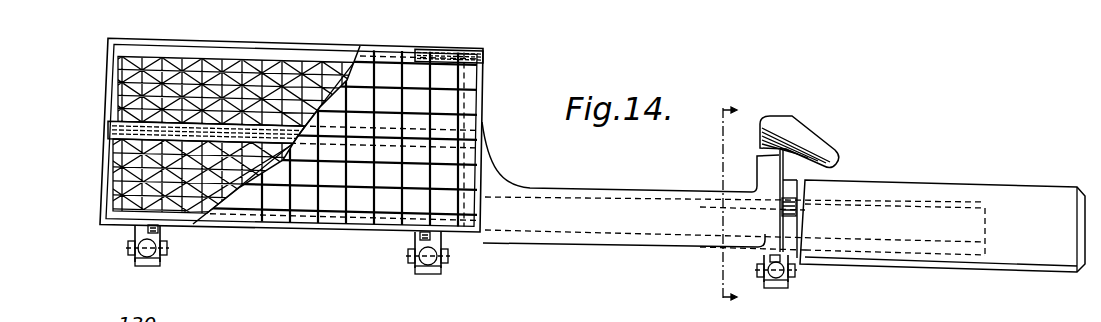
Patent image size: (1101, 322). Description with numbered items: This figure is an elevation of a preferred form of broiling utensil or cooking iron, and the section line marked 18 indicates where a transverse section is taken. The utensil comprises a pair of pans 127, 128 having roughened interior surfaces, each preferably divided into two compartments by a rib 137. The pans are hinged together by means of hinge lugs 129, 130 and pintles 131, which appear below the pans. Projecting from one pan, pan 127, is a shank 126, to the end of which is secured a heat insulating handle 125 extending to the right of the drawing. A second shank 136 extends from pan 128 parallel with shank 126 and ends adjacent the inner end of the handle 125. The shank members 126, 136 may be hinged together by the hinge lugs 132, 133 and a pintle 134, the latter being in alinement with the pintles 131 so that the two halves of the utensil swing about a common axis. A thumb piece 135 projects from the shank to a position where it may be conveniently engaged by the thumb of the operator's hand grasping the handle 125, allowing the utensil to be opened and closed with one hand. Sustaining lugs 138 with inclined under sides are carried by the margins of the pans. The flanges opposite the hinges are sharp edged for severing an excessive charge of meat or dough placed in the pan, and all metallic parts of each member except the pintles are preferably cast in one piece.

The heat insulating handle 125 is at (1032, 262).
The shank 126 is at (792, 196).
The pan 127 is at (123, 70).
The pan 128 is at (468, 106).
The hinge lug 129 is at (156, 237).
The hinge lug 130 is at (142, 266).
The pintle 131 is at (132, 249).
The hinge lug 132 is at (786, 289).
The hinge lug 133 is at (770, 258).
The pintle 134 is at (795, 273).
The thumb piece 135 is at (765, 160).
The shank 136 is at (733, 186).
The rib 137 is at (122, 137).
The sustaining lug 138 is at (465, 49).
The section line 18- 18 is at (743, 205).